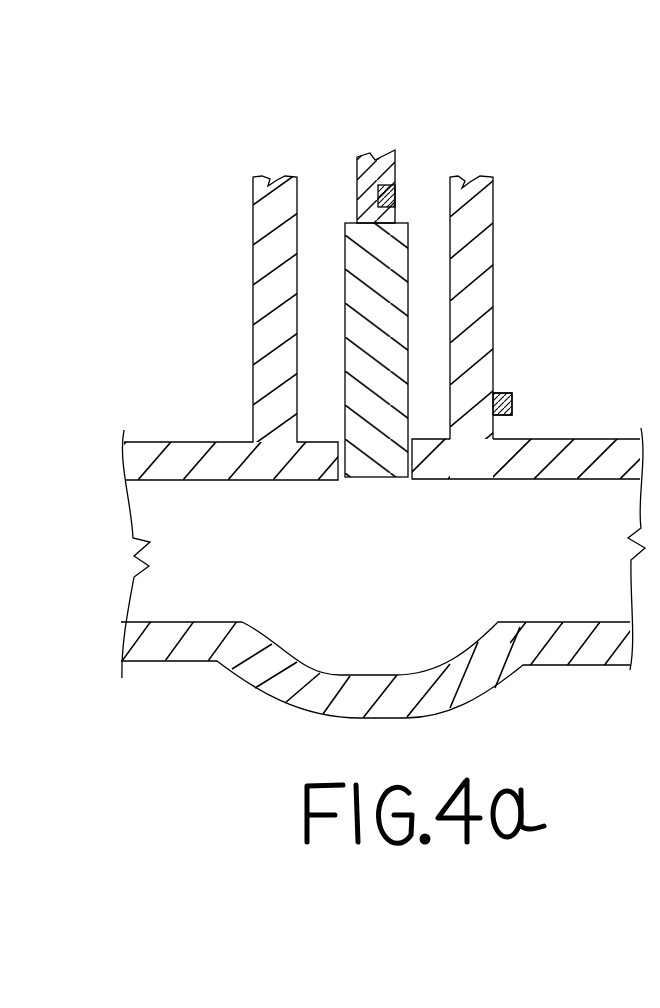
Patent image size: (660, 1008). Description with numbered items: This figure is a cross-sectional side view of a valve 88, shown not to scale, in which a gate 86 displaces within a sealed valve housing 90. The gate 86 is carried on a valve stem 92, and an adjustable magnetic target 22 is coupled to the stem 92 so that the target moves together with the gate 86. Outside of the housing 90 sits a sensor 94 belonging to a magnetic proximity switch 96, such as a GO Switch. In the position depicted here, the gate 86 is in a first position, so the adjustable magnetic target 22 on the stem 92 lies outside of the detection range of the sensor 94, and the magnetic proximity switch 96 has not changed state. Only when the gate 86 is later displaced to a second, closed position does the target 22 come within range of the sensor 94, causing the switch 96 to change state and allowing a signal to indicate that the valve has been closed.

The valve 88 is at (253, 143).
The sealed valve housing 90 is at (493, 233).
The gate 86 is at (408, 325).
The valve stem 92 is at (357, 172).
The adjustable magnetic target 22 is at (395, 190).
The sensor 94 is at (505, 393).
The magnetic proximity switch 96 is at (513, 405).